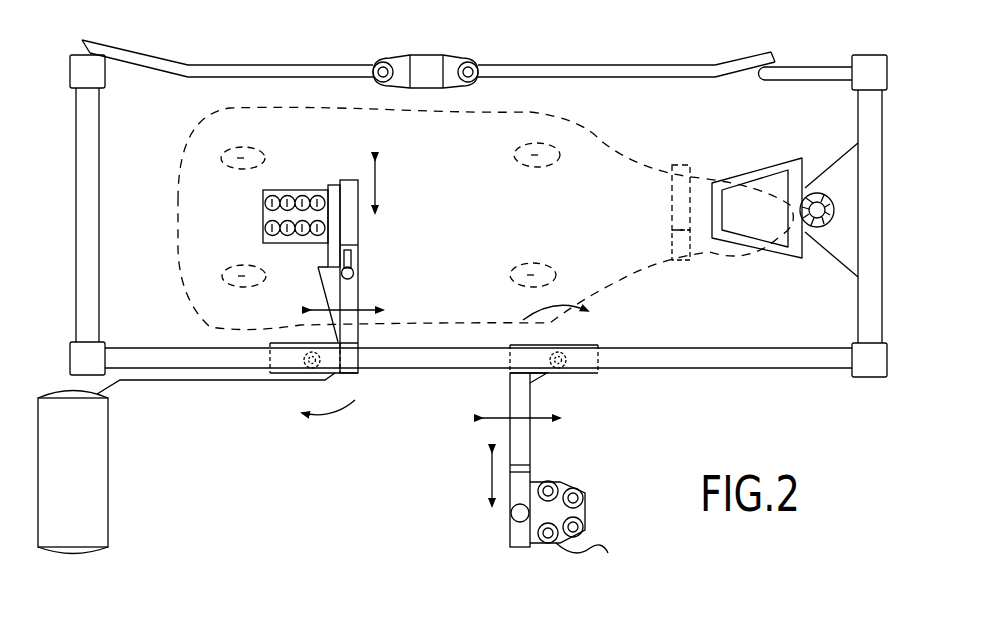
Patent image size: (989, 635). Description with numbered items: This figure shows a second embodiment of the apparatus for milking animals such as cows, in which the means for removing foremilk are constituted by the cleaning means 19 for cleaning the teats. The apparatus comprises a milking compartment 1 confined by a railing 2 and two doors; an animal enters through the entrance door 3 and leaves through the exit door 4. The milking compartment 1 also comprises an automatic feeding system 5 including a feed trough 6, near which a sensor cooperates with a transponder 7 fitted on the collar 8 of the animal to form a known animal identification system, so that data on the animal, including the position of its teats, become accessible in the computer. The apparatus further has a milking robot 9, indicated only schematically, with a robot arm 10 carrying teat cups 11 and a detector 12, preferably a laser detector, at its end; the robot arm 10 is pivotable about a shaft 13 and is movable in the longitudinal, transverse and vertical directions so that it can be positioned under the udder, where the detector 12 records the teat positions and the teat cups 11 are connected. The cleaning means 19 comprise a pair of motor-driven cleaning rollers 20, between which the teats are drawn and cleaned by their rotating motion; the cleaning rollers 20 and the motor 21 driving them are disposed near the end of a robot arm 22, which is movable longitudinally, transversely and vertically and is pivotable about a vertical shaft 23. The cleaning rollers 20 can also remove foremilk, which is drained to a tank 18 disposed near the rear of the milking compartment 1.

The milking compartment 1 is at (702, 314).
The railing 2 is at (868, 305).
The entrance door 3 is at (260, 63).
The exit door 4 is at (605, 64).
The automatic feeding system 5 is at (833, 242).
The feed trough 6 is at (772, 188).
The transponder 7 is at (672, 243).
The collar 8 is at (672, 197).
The milking robot 9 is at (580, 472).
The robot arm 10 is at (518, 395).
The teat cups 11 is at (586, 541).
The detector 12 is at (519, 513).
The shaft 13 is at (562, 361).
The tank 18 is at (92, 451).
The cleaning means 19 is at (277, 231).
The cleaning rollers 20 is at (268, 228).
The motor 21 is at (350, 265).
The robot arm 22 is at (358, 292).
The vertical shaft 23 is at (310, 351).